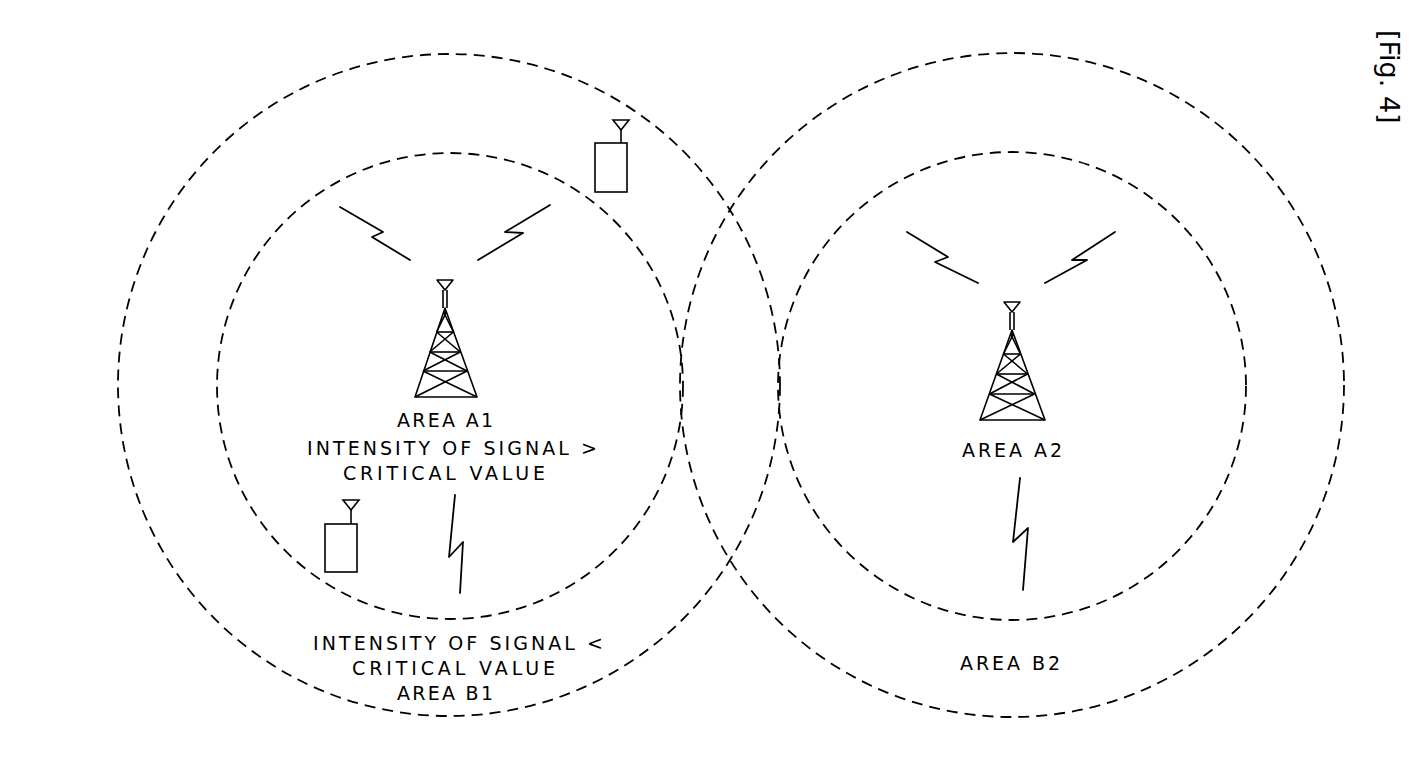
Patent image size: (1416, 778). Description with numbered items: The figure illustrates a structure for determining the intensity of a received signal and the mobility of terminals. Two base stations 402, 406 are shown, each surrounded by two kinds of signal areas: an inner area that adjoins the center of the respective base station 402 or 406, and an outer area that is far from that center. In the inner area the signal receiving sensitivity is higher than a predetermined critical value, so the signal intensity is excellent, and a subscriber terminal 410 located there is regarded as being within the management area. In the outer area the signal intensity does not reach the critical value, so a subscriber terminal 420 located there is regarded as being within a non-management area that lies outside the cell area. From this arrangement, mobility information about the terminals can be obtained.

The base station 402 is at (463, 352).
The base station 406 is at (1030, 377).
The subscriber terminal 410 is at (357, 552).
The subscriber terminal 420 is at (627, 180).